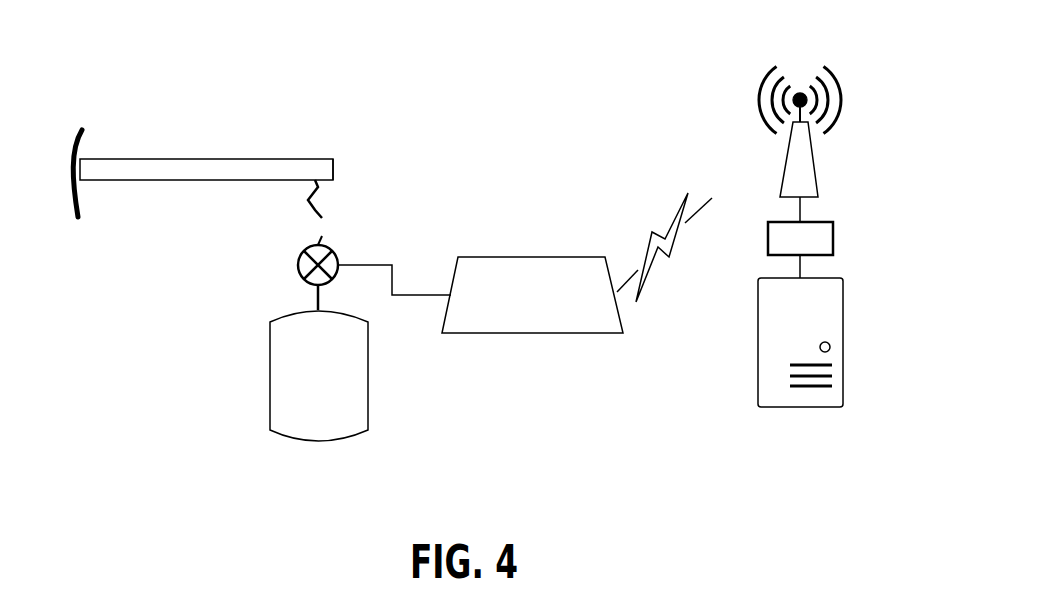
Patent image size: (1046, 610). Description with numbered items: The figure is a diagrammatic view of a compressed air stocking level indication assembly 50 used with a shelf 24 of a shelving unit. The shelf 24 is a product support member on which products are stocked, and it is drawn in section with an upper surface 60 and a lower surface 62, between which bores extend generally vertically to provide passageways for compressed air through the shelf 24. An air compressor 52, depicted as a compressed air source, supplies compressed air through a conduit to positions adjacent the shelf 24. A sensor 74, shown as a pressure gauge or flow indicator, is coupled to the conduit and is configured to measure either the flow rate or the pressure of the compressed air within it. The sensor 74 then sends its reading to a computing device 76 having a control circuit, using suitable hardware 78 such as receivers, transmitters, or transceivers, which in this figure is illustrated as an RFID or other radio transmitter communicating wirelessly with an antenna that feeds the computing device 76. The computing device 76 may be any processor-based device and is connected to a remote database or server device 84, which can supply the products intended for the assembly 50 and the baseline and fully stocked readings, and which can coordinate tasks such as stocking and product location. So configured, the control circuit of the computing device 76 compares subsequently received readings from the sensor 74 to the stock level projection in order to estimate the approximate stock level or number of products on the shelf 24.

The shelf 24 is at (333, 159).
The stocking level indication assembly 50 is at (497, 185).
The air compressor 52 is at (368, 430).
The upper surface 60 is at (200, 158).
The lower surface 62 is at (145, 181).
The sensor 74 is at (298, 271).
The computing device 76 is at (833, 237).
The hardware 78 is at (507, 333).
The remote server device 84 is at (758, 388).